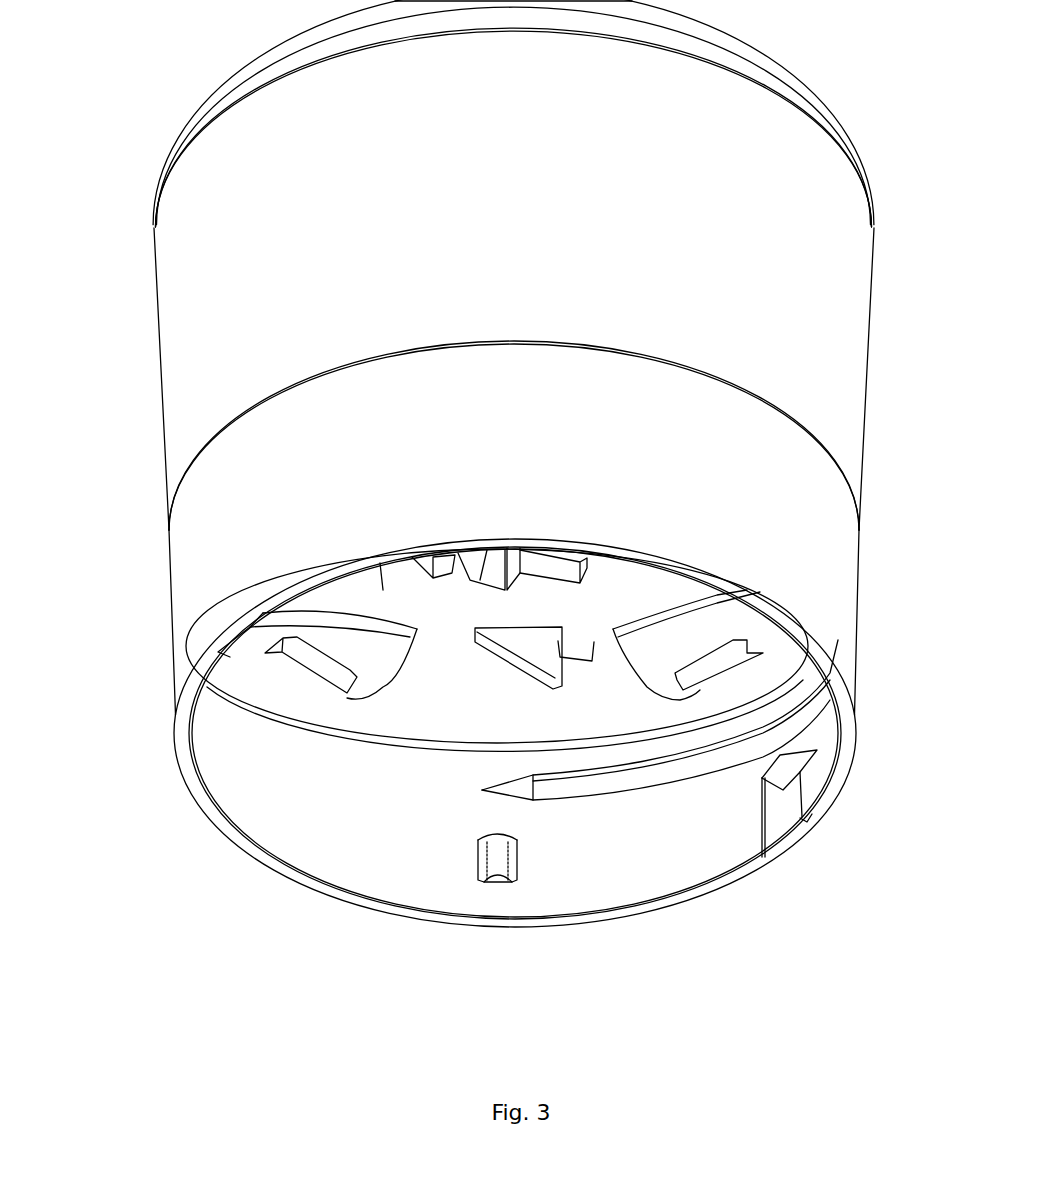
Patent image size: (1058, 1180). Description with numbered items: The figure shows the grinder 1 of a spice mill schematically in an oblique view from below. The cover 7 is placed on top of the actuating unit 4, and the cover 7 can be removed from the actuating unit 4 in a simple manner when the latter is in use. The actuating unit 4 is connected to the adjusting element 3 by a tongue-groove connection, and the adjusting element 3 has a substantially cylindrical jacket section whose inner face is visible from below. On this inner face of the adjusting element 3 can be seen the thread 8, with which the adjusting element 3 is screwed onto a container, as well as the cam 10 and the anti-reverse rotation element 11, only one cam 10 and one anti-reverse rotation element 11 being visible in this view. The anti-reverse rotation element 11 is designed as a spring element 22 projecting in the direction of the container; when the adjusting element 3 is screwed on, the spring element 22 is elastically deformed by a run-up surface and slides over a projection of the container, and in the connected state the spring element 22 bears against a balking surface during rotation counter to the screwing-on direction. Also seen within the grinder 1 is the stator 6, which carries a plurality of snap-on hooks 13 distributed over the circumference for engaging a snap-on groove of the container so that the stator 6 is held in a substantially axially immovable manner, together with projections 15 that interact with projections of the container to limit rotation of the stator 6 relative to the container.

The grinder 1 is at (502, 524).
The adjusting element 3 is at (858, 613).
The actuating unit 4 is at (878, 275).
The stator 6 is at (383, 588).
The cover 7 is at (770, 60).
The thread 8 is at (630, 797).
The cam 10 is at (500, 880).
The anti-reverse rotation element 11 is at (785, 789).
The snap-on hook 13 is at (322, 671).
The projection 15 is at (503, 663).
The spring element 22 is at (782, 757).